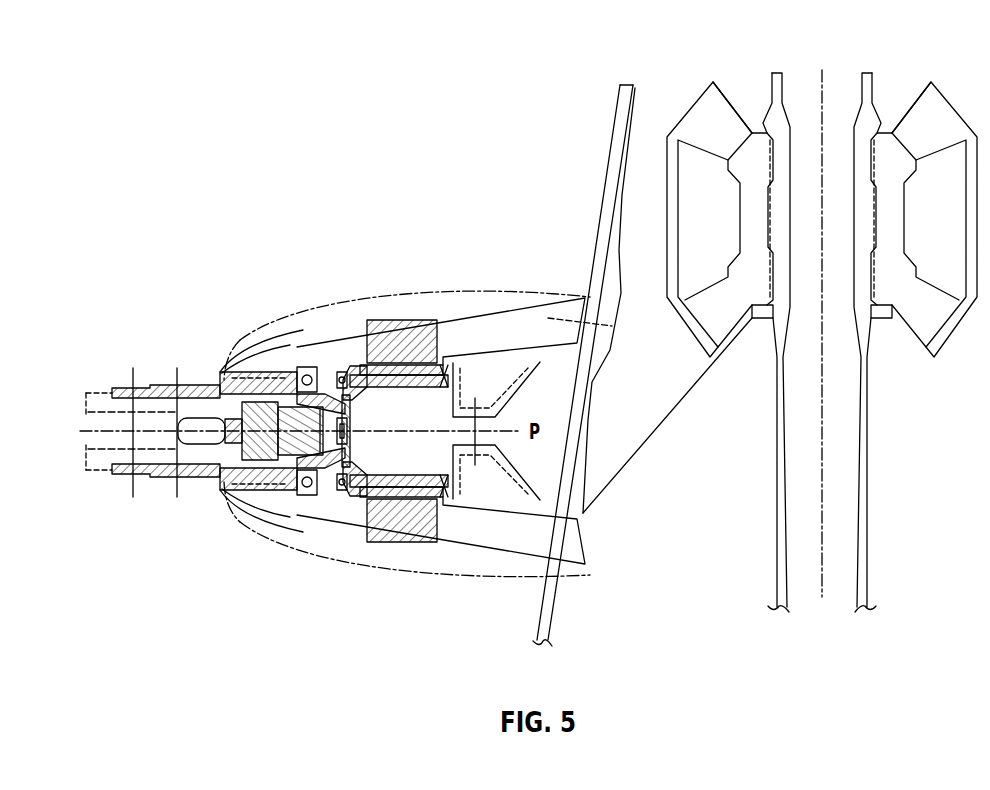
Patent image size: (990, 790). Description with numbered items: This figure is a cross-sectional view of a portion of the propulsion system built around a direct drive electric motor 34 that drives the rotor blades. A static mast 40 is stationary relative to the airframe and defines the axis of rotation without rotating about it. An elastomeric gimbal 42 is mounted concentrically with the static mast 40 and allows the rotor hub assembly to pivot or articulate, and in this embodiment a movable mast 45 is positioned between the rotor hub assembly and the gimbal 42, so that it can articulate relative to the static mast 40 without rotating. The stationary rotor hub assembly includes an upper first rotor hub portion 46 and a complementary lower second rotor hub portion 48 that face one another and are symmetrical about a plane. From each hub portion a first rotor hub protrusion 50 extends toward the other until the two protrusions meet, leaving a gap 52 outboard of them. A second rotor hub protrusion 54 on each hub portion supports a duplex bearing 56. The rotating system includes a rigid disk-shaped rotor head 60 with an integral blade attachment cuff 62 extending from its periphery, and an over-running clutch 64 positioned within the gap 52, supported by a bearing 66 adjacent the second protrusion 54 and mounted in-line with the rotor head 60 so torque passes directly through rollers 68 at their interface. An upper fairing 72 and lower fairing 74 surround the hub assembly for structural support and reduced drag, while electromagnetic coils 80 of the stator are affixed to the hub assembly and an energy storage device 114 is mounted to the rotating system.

The direct drive electric motor 34 is at (402, 560).
The static mast 40 is at (803, 518).
The elastomeric gimbal 42 is at (720, 115).
The movable mast 45 is at (640, 110).
The first rotor hub portion 46 is at (515, 330).
The second rotor hub portion 48 is at (513, 531).
The first rotor hub protrusion 50 is at (490, 395).
The gap 52 is at (413, 403).
The second rotor hub protrusion 54 is at (345, 380).
The bearing 56 is at (300, 372).
The rotor head 60 is at (280, 488).
The blade attachment cuff 62 is at (172, 497).
The over-running clutch 64 is at (345, 490).
The bearing 66 is at (342, 372).
The rollers 68 is at (327, 507).
The upper fairing 72 is at (476, 290).
The lower fairing 74 is at (483, 574).
The electromagnetic coil 80 is at (380, 320).
The energy storage device 114 is at (228, 488).